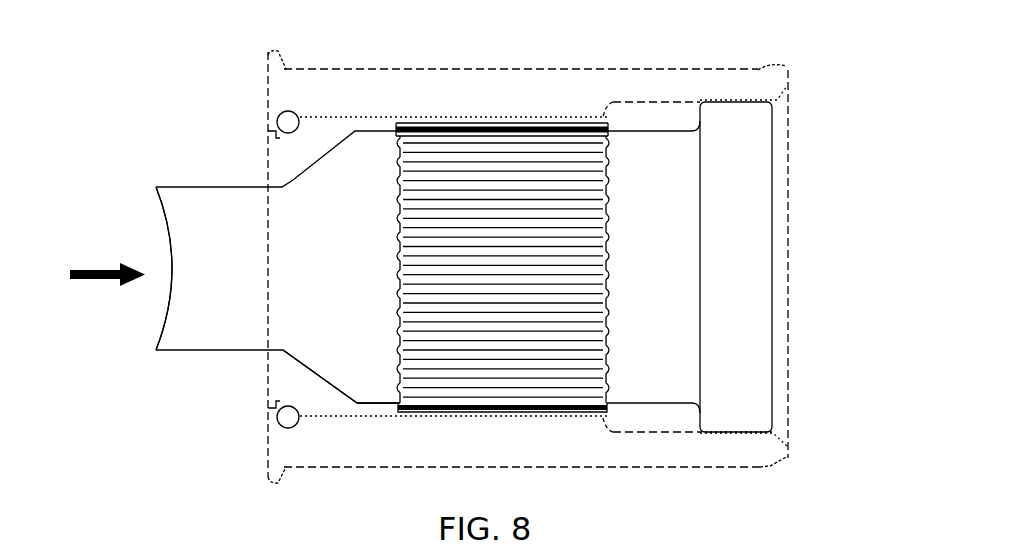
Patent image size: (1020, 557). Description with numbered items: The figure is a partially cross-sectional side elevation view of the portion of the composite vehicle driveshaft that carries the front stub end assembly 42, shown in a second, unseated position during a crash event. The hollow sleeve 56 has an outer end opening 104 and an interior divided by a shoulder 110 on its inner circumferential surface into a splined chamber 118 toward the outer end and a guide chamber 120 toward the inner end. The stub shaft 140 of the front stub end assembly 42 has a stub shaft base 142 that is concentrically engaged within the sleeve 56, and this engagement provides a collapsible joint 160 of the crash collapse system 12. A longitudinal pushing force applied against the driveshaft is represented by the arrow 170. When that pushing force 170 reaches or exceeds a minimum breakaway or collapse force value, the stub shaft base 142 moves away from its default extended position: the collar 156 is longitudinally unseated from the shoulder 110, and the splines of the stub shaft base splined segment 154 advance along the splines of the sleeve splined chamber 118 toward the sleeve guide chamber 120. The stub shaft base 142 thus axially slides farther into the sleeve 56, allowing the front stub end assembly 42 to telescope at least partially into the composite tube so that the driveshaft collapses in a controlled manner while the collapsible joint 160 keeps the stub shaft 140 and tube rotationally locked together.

The crash collapse system 12 is at (192, 73).
The outer end opening 104 is at (260, 138).
The collapsible joint 160 is at (192, 150).
The arrow 170 is at (93, 259).
The stub shaft 140 is at (200, 333).
The front stub end assembly 42 is at (157, 402).
The stub shaft base 142 is at (332, 353).
The splined chamber 118 is at (364, 409).
The stub shaft base splined segment 154 is at (536, 402).
The shoulder 110 is at (625, 118).
The guide chamber 120 is at (662, 418).
The collar 156 is at (756, 229).
The sleeve 56 is at (750, 474).